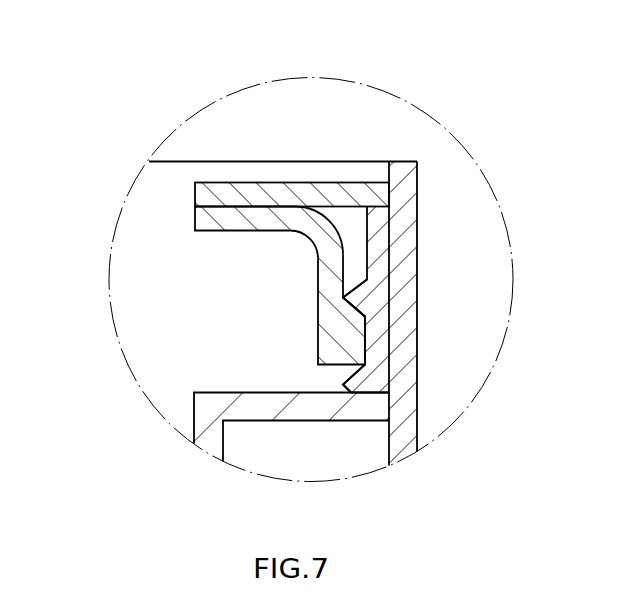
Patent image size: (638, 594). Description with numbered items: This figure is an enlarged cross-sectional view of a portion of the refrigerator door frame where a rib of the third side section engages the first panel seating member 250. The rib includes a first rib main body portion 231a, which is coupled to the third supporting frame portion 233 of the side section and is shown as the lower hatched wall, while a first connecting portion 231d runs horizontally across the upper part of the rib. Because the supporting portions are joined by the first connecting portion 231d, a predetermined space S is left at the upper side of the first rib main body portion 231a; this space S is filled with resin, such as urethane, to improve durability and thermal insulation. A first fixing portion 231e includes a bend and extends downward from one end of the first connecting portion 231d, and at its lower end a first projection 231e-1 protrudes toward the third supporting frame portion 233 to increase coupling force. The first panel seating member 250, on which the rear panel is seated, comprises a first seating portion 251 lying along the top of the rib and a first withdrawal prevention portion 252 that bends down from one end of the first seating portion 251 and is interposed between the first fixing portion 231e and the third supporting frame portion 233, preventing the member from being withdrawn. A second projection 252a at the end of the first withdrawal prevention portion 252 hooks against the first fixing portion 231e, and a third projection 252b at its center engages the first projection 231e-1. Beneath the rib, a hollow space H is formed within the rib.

The first panel seating member 250 is at (288, 31).
The first seating portion 251 is at (300, 195).
The first withdrawal prevention portion 252 is at (375, 242).
The second projection 252a is at (360, 383).
The third projection 252b is at (360, 295).
The first rib main body portion 231a is at (212, 445).
The first connecting portion 231d is at (199, 213).
The first fixing portion 231e is at (319, 318).
The first projection 231e-1 is at (350, 357).
The third supporting frame portion 233 is at (403, 428).
The space S is at (248, 287).
The hollow space H is at (318, 453).